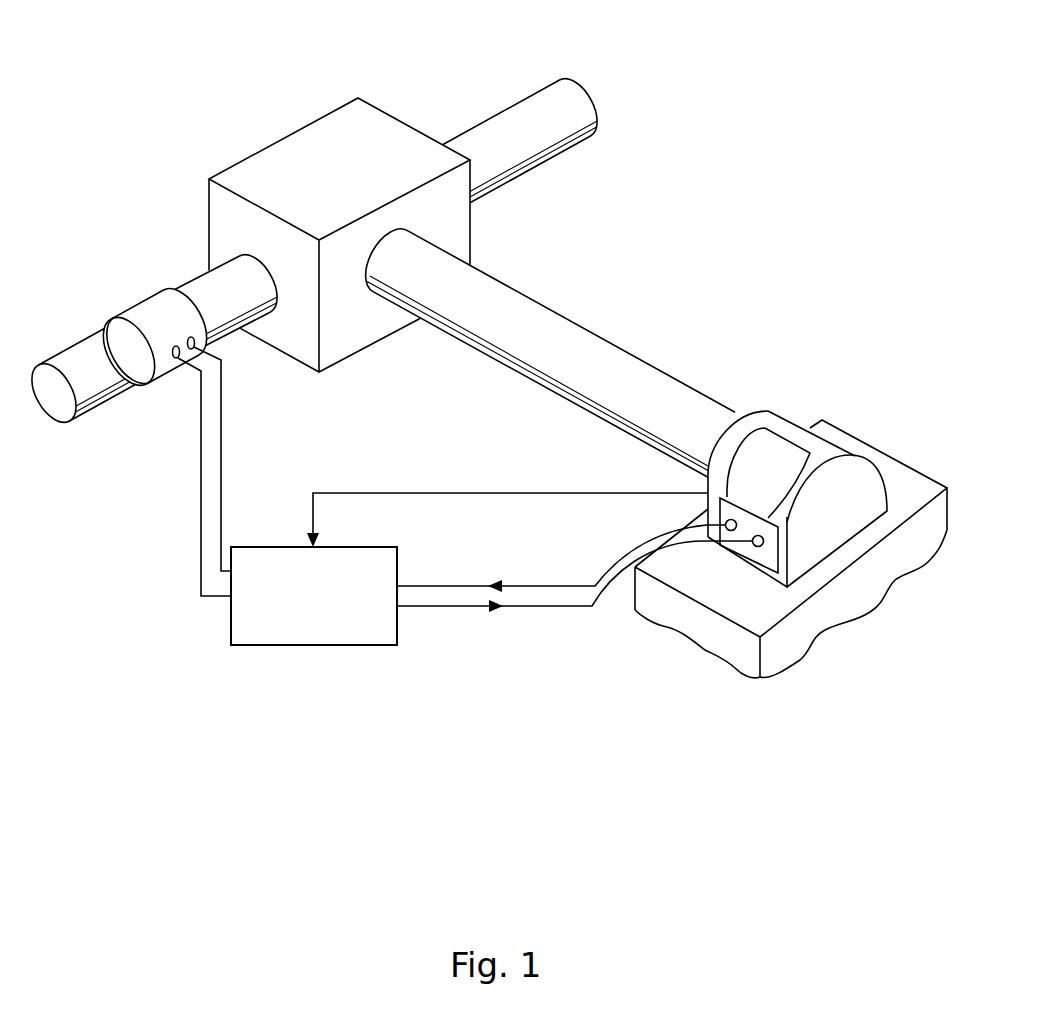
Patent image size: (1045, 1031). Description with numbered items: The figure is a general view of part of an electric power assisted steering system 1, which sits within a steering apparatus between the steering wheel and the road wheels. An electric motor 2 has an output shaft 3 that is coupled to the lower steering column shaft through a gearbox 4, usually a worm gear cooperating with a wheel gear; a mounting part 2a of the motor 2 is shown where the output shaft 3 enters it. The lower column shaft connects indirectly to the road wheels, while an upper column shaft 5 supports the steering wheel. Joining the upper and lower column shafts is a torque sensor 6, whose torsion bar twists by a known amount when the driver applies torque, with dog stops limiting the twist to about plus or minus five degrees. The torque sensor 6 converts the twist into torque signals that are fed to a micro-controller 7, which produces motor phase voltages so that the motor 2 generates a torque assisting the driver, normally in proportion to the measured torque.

The electric power assisted steering system 1 is at (726, 214).
The electric motor 2 is at (857, 480).
The motor mounting bracket 2a is at (768, 433).
The output shaft 3 is at (507, 305).
The gearbox 4 is at (330, 182).
The upper shaft 5 is at (478, 99).
The torque sensor 6 is at (155, 308).
The micro-controller 7 is at (305, 607).